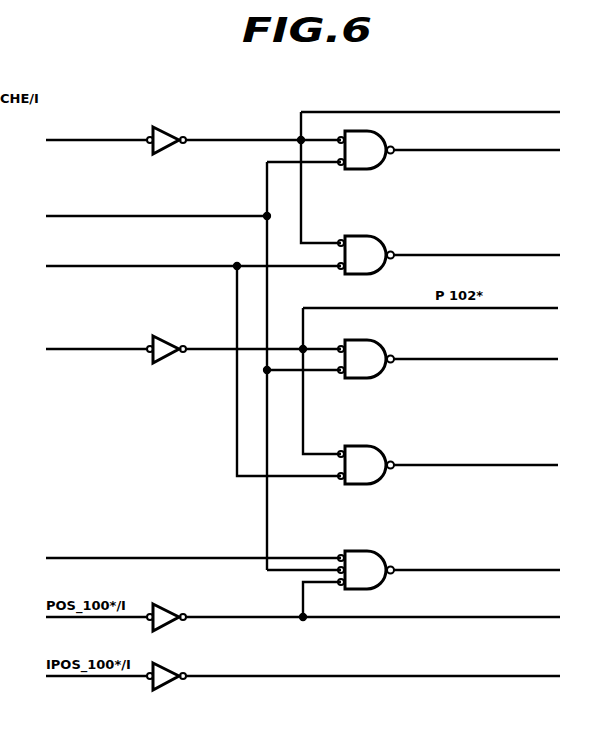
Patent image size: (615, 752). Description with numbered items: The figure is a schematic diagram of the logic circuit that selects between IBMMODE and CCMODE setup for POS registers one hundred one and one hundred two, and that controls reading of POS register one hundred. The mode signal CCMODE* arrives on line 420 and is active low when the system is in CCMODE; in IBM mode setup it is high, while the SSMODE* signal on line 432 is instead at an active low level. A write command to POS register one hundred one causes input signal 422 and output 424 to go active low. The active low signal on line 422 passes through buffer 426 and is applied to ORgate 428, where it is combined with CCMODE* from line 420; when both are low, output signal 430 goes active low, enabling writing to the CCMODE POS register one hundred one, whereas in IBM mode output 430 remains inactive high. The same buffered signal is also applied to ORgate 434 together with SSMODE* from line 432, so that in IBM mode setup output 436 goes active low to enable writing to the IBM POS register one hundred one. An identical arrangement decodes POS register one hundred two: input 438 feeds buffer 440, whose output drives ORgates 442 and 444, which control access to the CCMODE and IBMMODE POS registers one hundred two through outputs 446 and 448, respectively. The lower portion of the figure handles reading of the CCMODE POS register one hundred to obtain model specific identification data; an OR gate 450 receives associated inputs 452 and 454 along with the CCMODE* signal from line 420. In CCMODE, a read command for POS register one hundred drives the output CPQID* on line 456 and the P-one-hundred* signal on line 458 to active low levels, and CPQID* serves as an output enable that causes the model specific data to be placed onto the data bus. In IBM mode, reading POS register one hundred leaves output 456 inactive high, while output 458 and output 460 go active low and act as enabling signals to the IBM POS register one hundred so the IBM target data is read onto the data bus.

The line 420 is at (46, 216).
The input signal 422 is at (46, 140).
The output 424 is at (544, 112).
The buffer 426 is at (168, 126).
The ORgate 428 is at (388, 122).
The output signal 430 is at (548, 150).
The line 432 is at (46, 266).
The ORgate 434 is at (380, 236).
The output 436 is at (548, 255).
The input 438 is at (46, 349).
The buffer 440 is at (164, 364).
The ORgate 442 is at (380, 340).
The ORgate 444 is at (380, 446).
The output 446 is at (545, 359).
The output 448 is at (540, 465).
The NAND gate 450 is at (376, 551).
The input 452 is at (205, 618).
The input 454 is at (152, 558).
The line 456 is at (537, 570).
The line 458 is at (528, 617).
The output 460 is at (530, 676).